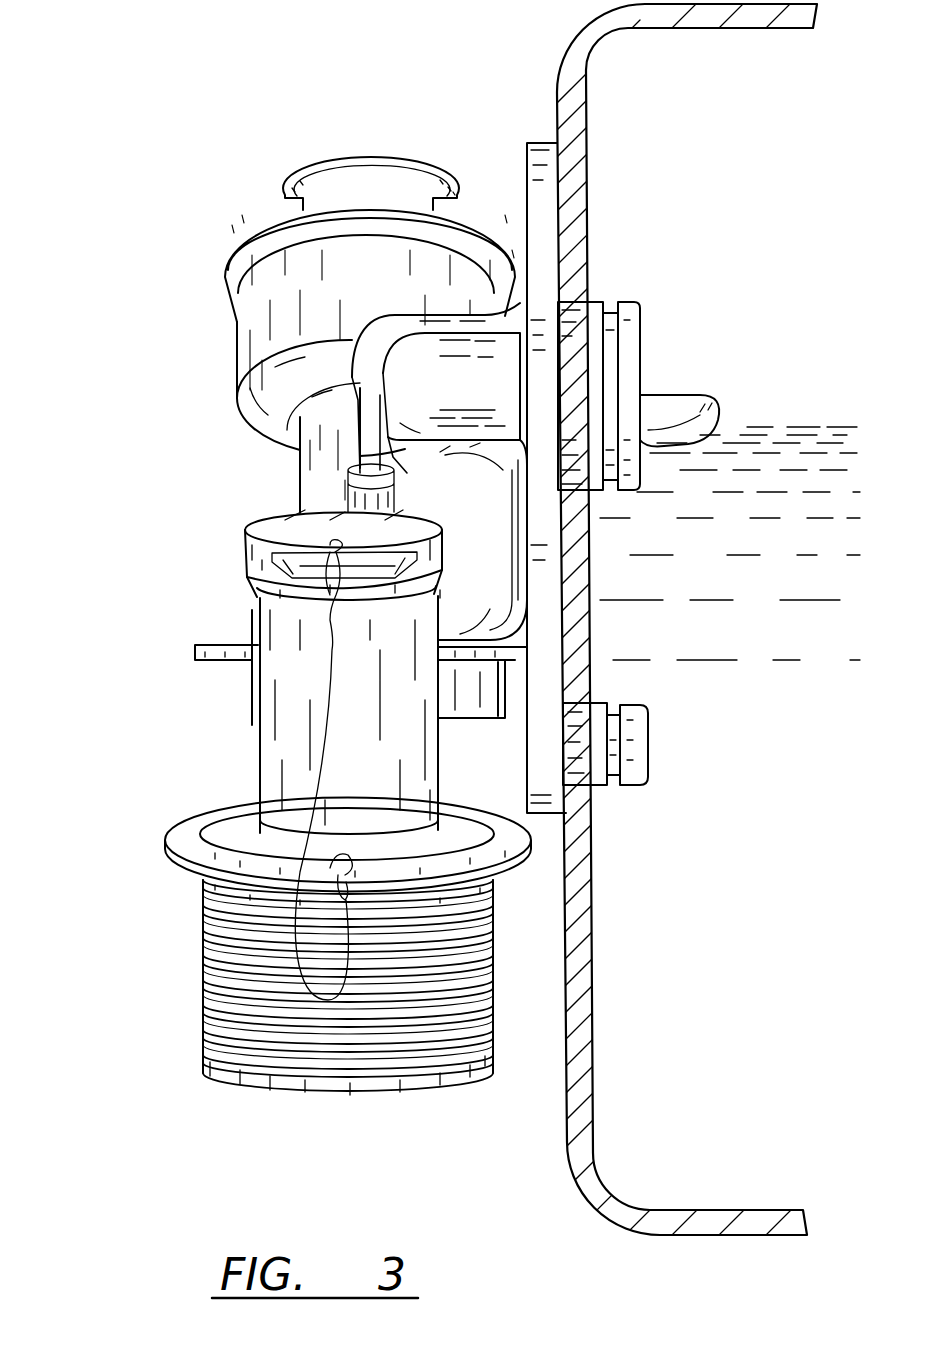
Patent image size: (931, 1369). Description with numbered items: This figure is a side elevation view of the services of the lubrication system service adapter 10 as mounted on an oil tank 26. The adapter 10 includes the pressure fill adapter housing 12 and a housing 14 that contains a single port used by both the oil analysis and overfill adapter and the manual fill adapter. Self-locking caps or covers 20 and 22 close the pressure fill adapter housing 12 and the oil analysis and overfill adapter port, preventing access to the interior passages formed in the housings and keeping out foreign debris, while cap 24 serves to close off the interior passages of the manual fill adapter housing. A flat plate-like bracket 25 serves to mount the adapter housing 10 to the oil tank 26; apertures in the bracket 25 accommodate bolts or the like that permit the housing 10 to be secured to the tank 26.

The lubrication system service adapter 10 is at (150, 268).
The pressure fill adapter housing 12 is at (390, 301).
The housing 14 is at (368, 741).
The cap 20 is at (252, 675).
The cap 22 is at (433, 173).
The cap 24 is at (478, 1084).
The bracket 25 is at (575, 607).
The oil tank 26 is at (590, 252).